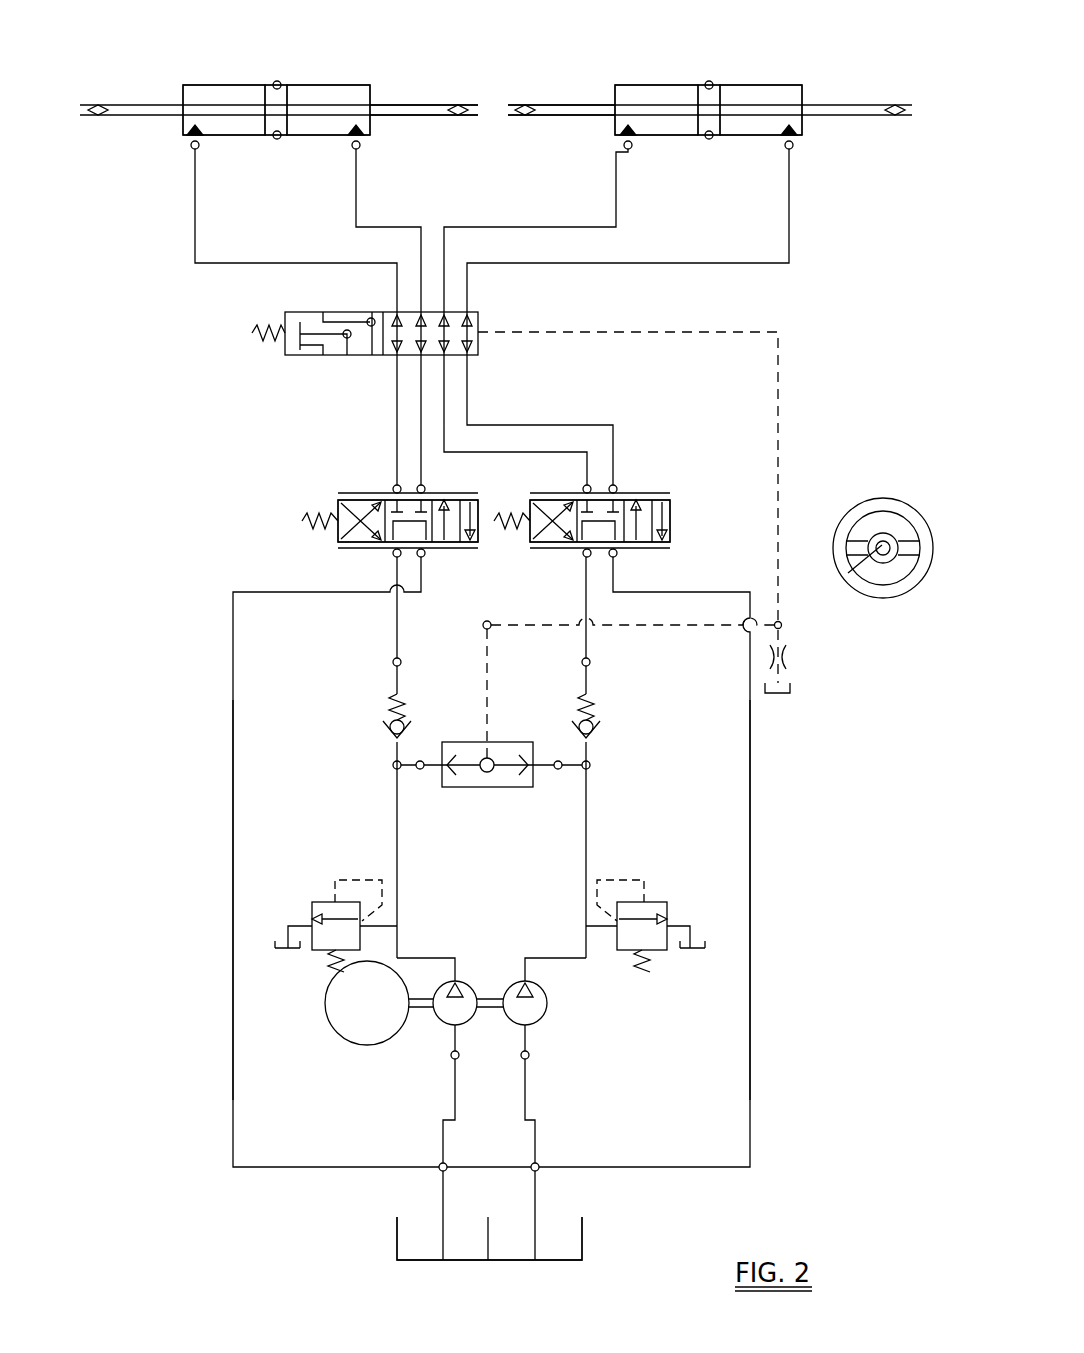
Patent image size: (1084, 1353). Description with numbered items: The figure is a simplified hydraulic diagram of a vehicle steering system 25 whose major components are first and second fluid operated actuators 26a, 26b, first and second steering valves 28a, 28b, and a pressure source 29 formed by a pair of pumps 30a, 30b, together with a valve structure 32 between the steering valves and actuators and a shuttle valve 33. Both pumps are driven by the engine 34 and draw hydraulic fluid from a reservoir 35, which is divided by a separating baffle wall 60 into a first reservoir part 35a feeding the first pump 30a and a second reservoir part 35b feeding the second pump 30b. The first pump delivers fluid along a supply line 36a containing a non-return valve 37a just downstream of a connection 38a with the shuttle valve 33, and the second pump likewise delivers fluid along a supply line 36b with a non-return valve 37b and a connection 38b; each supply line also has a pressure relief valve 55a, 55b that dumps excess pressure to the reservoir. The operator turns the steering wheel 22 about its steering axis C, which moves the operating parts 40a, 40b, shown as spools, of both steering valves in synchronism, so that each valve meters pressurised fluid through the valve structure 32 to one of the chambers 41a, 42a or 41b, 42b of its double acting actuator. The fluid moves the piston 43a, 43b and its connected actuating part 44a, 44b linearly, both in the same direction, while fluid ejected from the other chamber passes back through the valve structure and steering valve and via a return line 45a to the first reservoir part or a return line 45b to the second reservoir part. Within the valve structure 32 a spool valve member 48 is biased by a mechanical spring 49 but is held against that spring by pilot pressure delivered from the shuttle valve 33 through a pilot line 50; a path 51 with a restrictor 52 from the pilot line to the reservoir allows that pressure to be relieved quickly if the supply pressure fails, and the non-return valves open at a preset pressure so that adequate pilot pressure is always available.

The steering wheel 22 is at (866, 520).
The steering system 25 is at (220, 588).
The first fluid operated actuator 26a is at (181, 140).
The second fluid operated actuator 26b is at (801, 144).
The first steering valve 28a is at (338, 542).
The second steering valve 28b is at (670, 542).
The pressure source 29 is at (452, 1075).
The first pump 30a is at (440, 1015).
The second pump 30b is at (545, 1015).
The valve structure 32 is at (480, 312).
The shuttle valve 33 is at (476, 787).
The engine 34 is at (341, 1028).
The reservoir 35 is at (571, 973).
The first reservoir part 35a is at (412, 1225).
The second reservoir part 35b is at (565, 1228).
The supply line 36a is at (397, 622).
The supply line 36b is at (586, 640).
The non-return valve 37a is at (405, 712).
The non-return valve 37b is at (600, 718).
The connection 38a is at (393, 765).
The connection 38b is at (590, 768).
The operating part 40a is at (343, 500).
The operating part 40b is at (648, 505).
The chamber 41a is at (212, 83).
The chamber 41b is at (633, 95).
The chamber 42a is at (313, 127).
The chamber 42b is at (802, 92).
The piston 43a is at (285, 102).
The piston 43b is at (710, 103).
The actuating part 44a is at (392, 117).
The actuating member 44b is at (558, 117).
The return line 45a is at (233, 765).
The return line 45b is at (751, 790).
The valve member 48 is at (360, 312).
The mechanical spring 49 is at (252, 333).
The pilot line 50 is at (797, 346).
The path 51 is at (784, 632).
The restrictor 52 is at (787, 657).
The pressure relief valve 55a is at (318, 902).
The pressure relief valve 55b is at (658, 902).
The separating baffle wall 60 is at (490, 1228).
The steering axis C is at (845, 580).